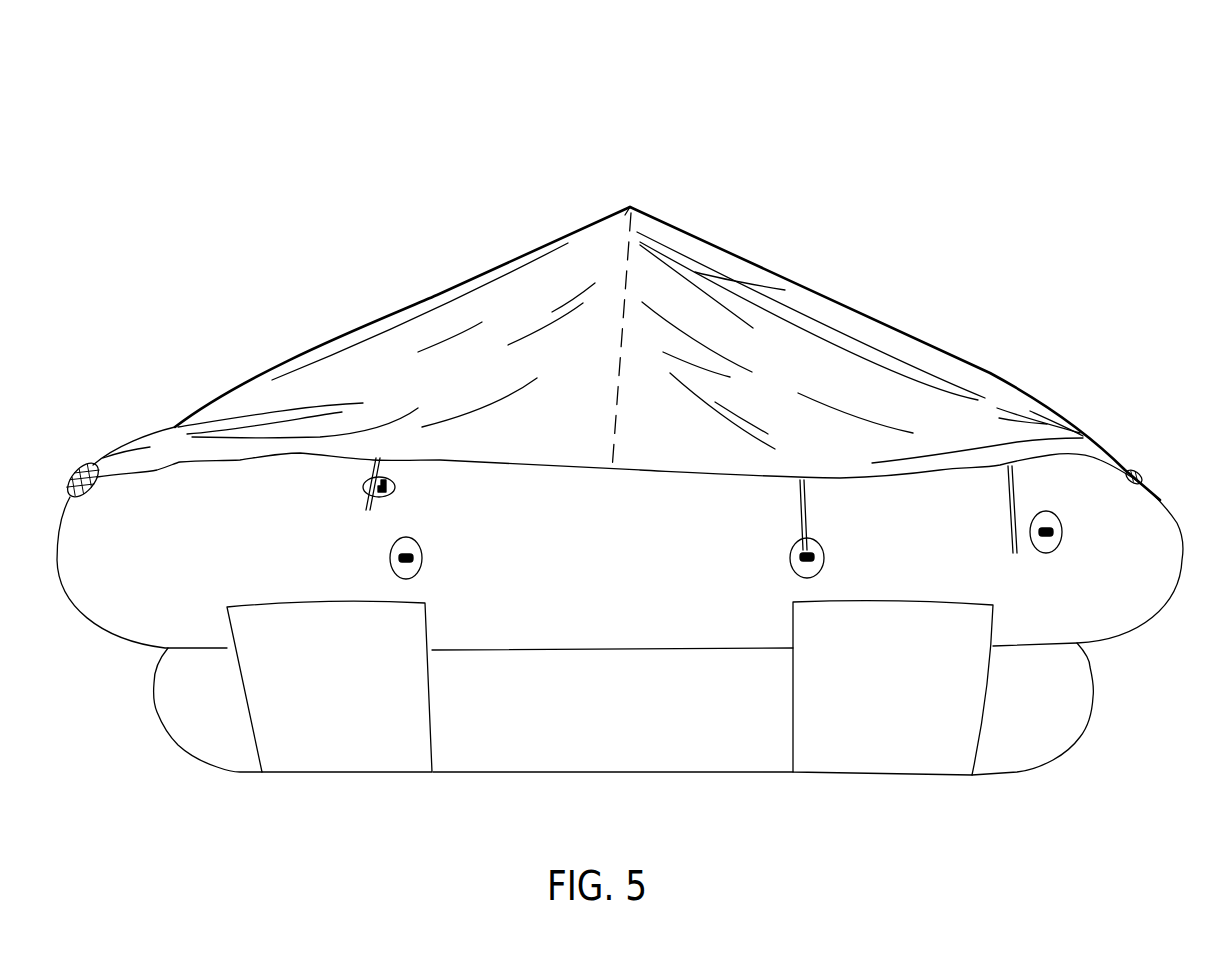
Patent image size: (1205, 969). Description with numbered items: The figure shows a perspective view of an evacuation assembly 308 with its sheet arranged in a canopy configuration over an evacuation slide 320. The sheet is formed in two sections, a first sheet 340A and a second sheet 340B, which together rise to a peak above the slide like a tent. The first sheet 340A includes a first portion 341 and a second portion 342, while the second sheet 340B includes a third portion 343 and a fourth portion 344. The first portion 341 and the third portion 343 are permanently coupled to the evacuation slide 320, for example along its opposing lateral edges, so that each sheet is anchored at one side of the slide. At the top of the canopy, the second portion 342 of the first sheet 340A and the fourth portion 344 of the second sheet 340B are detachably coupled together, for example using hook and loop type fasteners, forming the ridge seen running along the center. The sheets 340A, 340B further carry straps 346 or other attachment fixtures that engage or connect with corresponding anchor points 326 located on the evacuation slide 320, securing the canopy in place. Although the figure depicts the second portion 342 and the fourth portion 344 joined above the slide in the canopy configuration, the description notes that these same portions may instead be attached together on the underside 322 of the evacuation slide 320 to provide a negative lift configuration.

The evacuation assembly 308 is at (305, 136).
The evacuation slide 320 is at (613, 617).
The underside 322 is at (802, 817).
The anchor points 326 is at (390, 488).
The first sheet 340A is at (813, 308).
The second sheet 340B is at (512, 291).
The first portion 341 is at (1108, 455).
The second portion 342 is at (628, 250).
The third portion 343 is at (97, 457).
The fourth portion 344 is at (624, 270).
The straps 346 is at (370, 463).